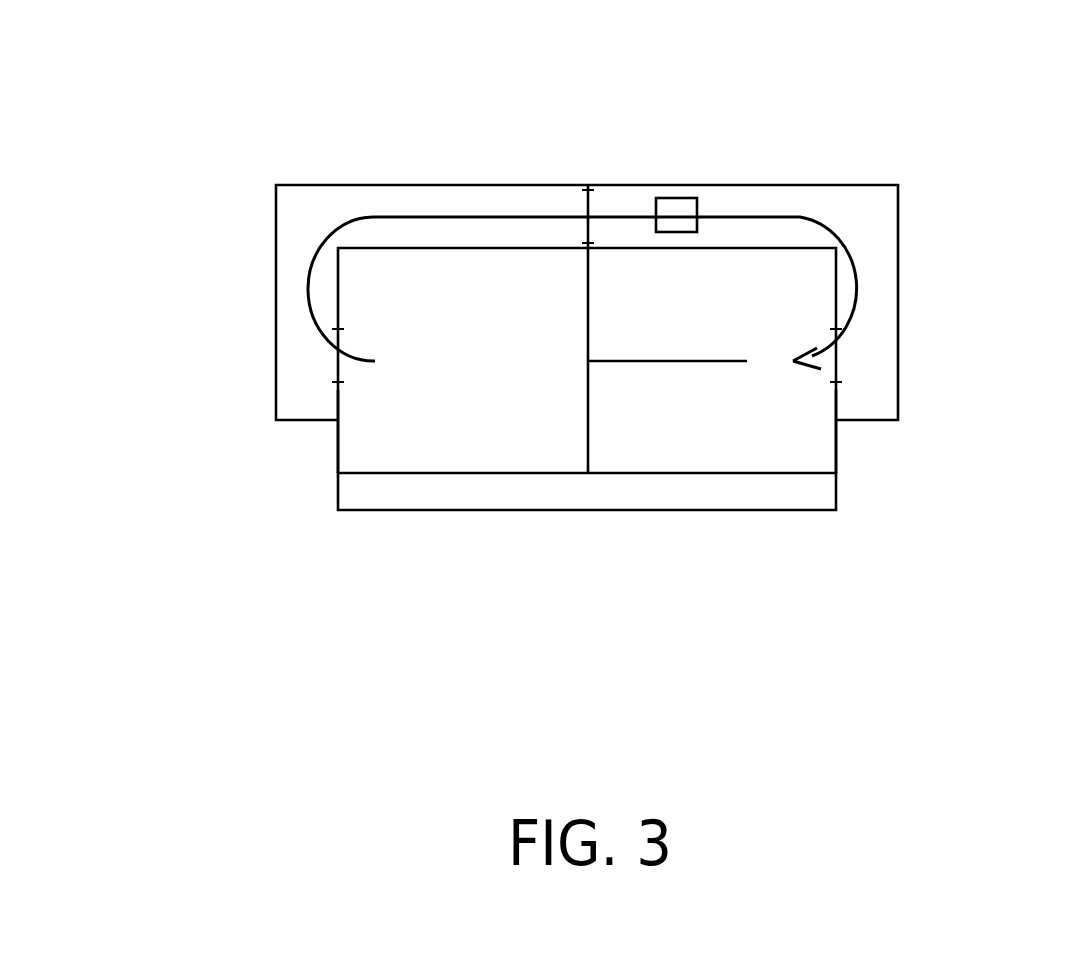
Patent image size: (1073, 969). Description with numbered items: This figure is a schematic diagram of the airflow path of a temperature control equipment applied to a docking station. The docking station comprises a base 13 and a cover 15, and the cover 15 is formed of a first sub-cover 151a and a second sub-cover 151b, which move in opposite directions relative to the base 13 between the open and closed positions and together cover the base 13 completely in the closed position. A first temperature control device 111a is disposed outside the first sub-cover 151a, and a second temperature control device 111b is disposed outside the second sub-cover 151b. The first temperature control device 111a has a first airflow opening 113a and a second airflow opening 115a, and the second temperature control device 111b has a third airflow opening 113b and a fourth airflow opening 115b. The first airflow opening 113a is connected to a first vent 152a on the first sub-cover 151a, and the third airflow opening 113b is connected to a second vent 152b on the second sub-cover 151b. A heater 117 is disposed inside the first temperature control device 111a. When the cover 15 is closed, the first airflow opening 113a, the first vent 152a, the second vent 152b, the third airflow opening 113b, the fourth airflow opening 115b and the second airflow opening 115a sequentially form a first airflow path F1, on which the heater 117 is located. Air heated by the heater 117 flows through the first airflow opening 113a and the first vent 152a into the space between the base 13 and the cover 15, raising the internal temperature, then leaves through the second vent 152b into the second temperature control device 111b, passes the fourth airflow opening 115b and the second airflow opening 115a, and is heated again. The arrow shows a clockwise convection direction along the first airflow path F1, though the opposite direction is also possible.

The first temperature control device 111a is at (898, 347).
The second temperature control device 111b is at (276, 349).
The first airflow opening 113a is at (838, 364).
The third airflow opening 113b is at (337, 363).
The second airflow opening 115a is at (602, 214).
The fourth airflow opening 115b is at (584, 200).
The heater 117 is at (675, 197).
The first airflow path F1 is at (787, 217).
The base 13 is at (615, 493).
The cover 15 is at (628, 444).
The first sub-cover 151a is at (836, 452).
The second sub-cover 151b is at (338, 452).
The first vent 152a is at (833, 372).
The second vent 152b is at (340, 372).